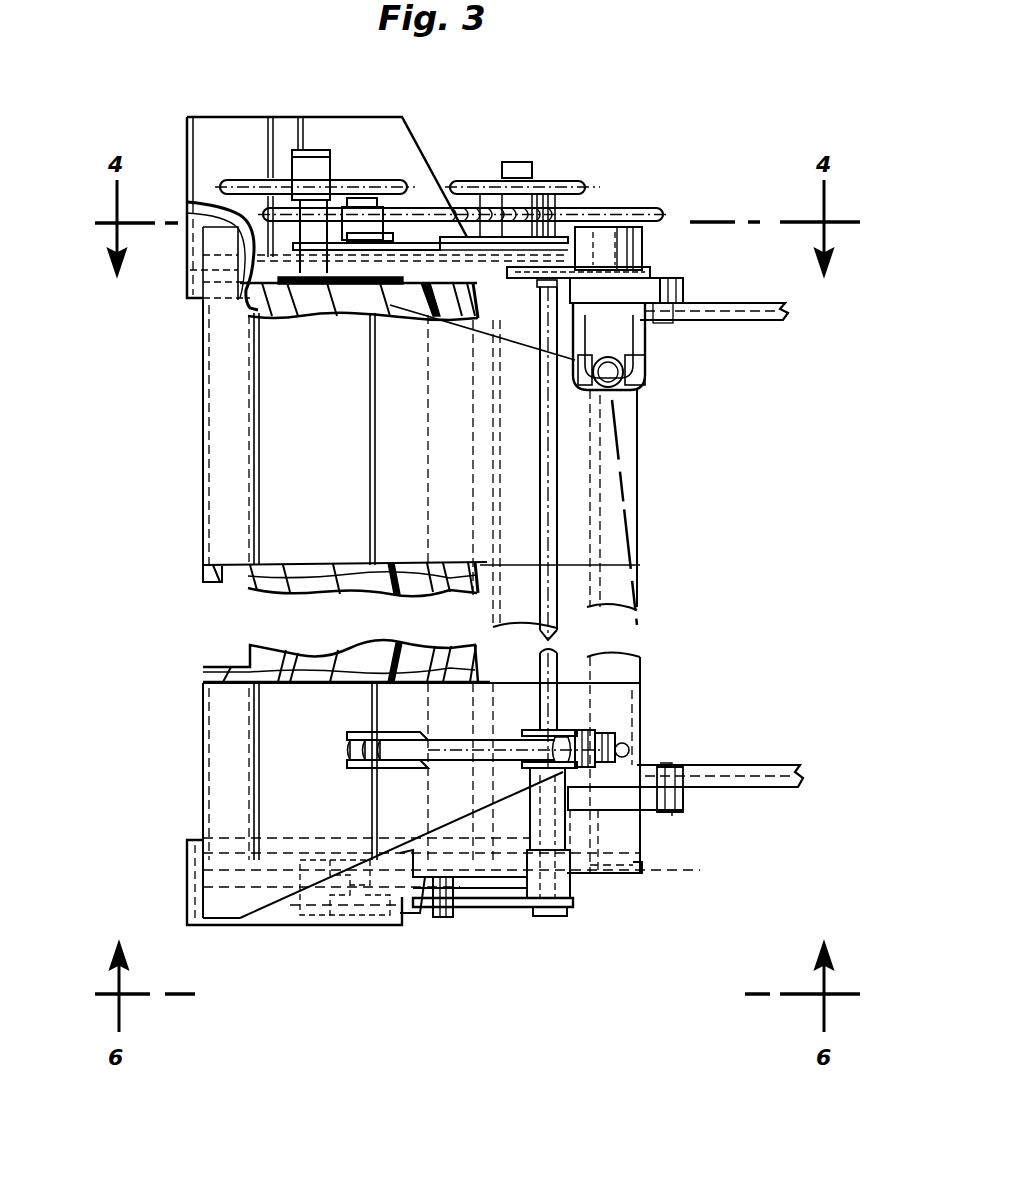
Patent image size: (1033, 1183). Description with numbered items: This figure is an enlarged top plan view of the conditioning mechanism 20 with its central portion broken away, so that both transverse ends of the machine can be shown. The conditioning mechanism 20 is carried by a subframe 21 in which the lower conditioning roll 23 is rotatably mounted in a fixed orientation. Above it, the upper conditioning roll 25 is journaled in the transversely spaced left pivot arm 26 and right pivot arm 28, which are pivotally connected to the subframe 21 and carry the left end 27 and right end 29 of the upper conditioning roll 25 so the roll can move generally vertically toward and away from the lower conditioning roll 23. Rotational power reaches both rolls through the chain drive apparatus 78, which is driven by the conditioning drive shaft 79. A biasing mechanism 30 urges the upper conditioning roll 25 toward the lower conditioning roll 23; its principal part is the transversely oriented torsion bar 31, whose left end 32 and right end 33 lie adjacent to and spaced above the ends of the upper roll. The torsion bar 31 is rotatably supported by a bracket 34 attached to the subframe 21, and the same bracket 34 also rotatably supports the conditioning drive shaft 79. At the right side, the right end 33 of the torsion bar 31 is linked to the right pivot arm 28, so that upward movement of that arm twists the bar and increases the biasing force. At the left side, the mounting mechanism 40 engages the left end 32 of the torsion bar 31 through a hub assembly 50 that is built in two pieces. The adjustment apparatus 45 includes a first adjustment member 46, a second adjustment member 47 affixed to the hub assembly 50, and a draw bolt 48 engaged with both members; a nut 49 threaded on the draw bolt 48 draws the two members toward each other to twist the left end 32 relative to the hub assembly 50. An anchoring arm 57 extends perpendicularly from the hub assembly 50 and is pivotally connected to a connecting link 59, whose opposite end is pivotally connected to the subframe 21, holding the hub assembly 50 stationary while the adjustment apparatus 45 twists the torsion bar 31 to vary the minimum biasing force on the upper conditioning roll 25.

The conditioning mechanism 20 is at (290, 98).
The subframe 21 is at (635, 873).
The lower conditioning roll 23 is at (715, 315).
The upper conditioning roll 25 is at (217, 668).
The left pivot arm 26 is at (235, 890).
The left end of upper conditioning roll 27 is at (420, 885).
The right pivot arm 28 is at (262, 312).
The right end of upper conditioning roll 29 is at (300, 293).
The biasing mechanism 30 is at (548, 933).
The torsion bar 31 is at (557, 640).
The left end of torsion bar 32 is at (553, 695).
The right end of torsion bar 33 is at (543, 297).
The bracket 34 is at (640, 290).
The mounting mechanism 40 is at (585, 910).
The adjustment apparatus 45 is at (362, 770).
The first adjustment member 46 is at (578, 728).
The second adjustment member 47 is at (360, 735).
The draw bolt 48 is at (350, 750).
The nut 49 is at (602, 742).
The hub assembly 50 is at (553, 860).
The anchoring arm 57 is at (495, 907).
The connecting link 59 is at (345, 915).
The chain drive apparatus 78 is at (437, 185).
The conditioning drive shaft 79 is at (652, 395).